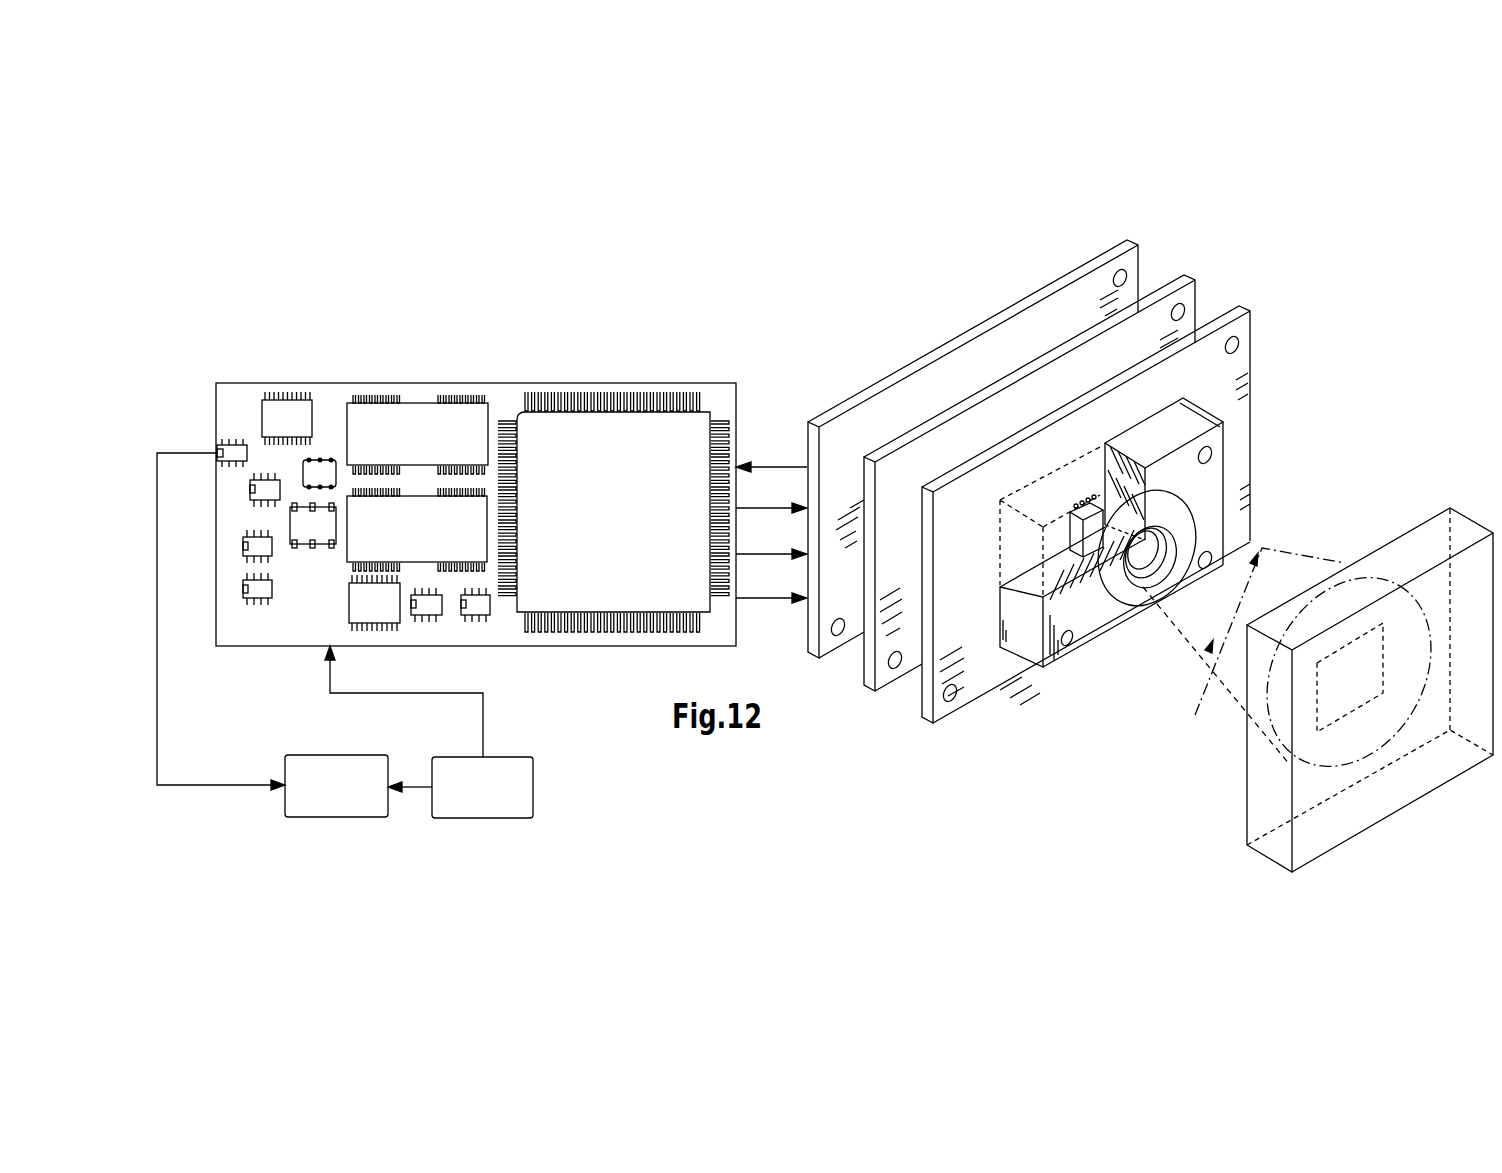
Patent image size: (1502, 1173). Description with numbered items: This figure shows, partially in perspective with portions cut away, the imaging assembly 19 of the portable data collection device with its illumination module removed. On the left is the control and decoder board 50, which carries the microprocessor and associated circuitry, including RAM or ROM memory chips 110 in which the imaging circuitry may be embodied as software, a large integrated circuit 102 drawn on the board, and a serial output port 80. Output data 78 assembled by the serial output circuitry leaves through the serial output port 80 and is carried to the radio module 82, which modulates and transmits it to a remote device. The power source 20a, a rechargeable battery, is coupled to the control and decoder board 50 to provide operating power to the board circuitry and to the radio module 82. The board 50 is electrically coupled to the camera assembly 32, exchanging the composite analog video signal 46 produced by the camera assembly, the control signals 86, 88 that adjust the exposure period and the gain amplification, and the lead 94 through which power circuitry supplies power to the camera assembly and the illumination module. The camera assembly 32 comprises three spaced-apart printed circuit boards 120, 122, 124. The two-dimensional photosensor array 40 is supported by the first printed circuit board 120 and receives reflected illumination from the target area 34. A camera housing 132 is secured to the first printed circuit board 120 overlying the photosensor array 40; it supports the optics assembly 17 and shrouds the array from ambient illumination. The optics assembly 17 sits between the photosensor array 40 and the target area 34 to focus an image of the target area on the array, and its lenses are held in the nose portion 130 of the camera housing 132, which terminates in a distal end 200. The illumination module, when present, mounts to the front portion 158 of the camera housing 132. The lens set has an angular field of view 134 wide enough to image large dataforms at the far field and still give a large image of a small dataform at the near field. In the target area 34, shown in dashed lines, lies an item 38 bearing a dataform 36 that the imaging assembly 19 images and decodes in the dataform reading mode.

The imaging assembly 19 is at (794, 214).
The camera assembly 32 is at (1206, 268).
The control and decoder board 50 is at (412, 378).
The memory chips 110 is at (427, 423).
The microprocessor 102 is at (622, 455).
The serial output port 80 is at (237, 455).
The third printed circuit board 124 is at (843, 397).
The second printed circuit board 122 is at (872, 447).
The first printed circuit board 120 is at (927, 485).
The composite analog video signal 46 is at (764, 466).
The lead 94 is at (747, 507).
The control signal 86 is at (747, 553).
The control signal 88 is at (741, 597).
The output data 78 is at (173, 785).
The radio module 82 is at (350, 817).
The power source 20a is at (445, 817).
The front portion 158 is at (1180, 463).
The distal end 200 is at (1173, 513).
The camera housing 132 is at (1240, 475).
The nose portion 130 is at (1098, 595).
The optics assembly 17 is at (1165, 564).
The angular field of view 134 is at (1262, 645).
The 2D photosensor array 40 is at (1075, 525).
The item 38 is at (1417, 545).
The dataform 36 is at (1358, 683).
The target area 34 is at (1320, 770).